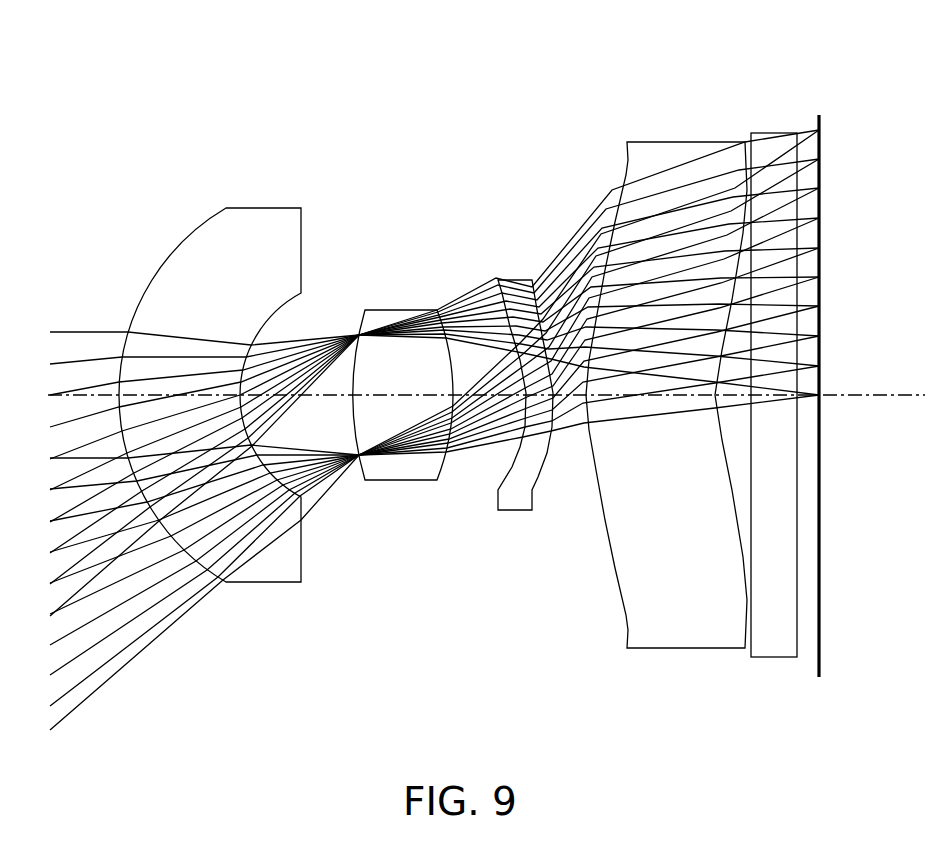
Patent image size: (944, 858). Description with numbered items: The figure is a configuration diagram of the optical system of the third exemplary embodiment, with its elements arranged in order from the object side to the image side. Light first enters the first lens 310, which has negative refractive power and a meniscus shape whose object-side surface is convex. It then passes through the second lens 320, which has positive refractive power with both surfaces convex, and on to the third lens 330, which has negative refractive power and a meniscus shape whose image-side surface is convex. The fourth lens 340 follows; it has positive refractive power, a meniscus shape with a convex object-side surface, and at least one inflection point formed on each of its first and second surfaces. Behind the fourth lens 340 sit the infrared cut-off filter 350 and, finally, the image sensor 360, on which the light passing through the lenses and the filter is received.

The first lens 310 is at (266, 208).
The second lens 320 is at (388, 310).
The third lens 330 is at (507, 280).
The fourth lens 340 is at (668, 142).
The infrared cut-off filter 350 is at (758, 133).
The image sensor 360 is at (822, 143).